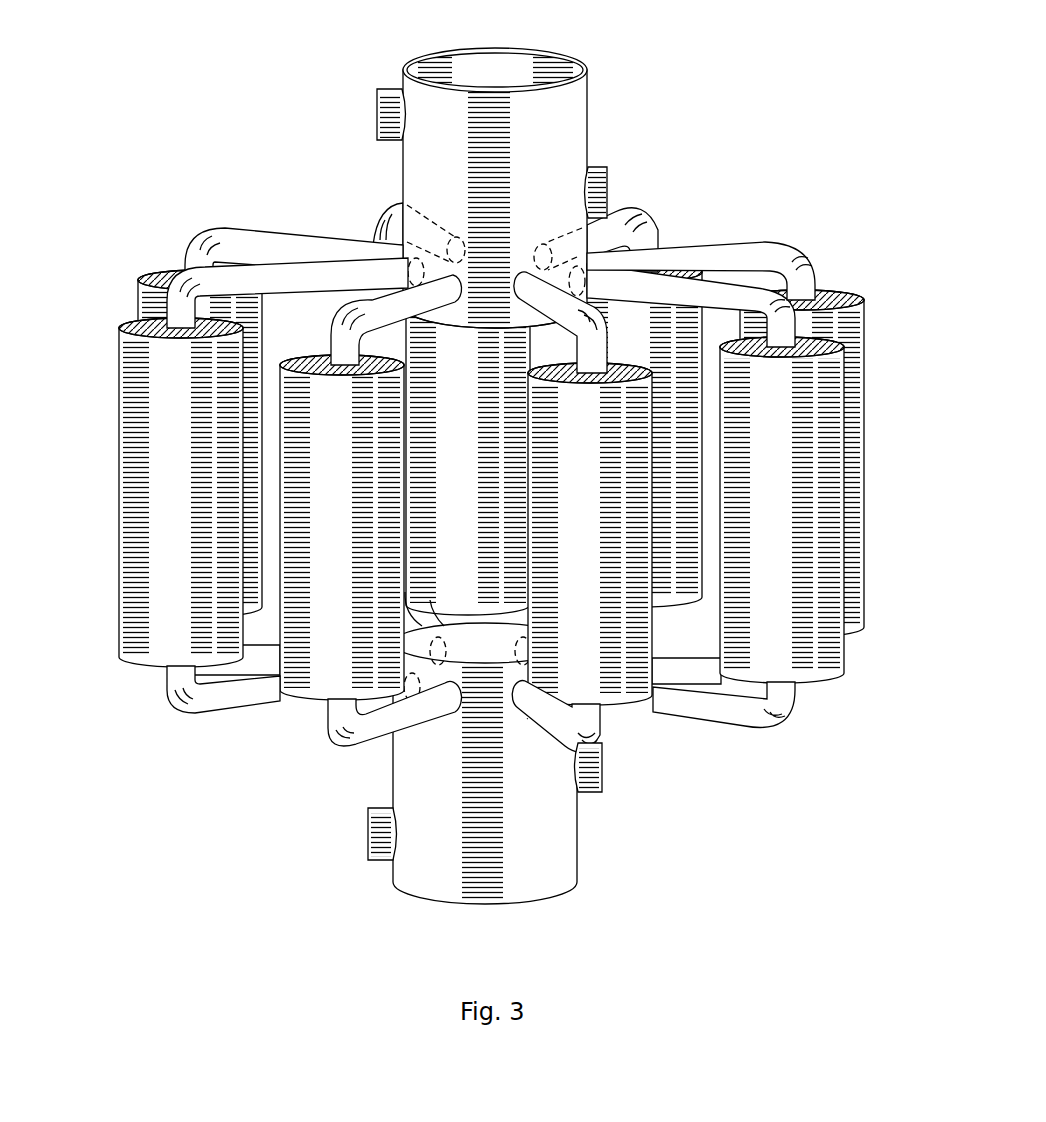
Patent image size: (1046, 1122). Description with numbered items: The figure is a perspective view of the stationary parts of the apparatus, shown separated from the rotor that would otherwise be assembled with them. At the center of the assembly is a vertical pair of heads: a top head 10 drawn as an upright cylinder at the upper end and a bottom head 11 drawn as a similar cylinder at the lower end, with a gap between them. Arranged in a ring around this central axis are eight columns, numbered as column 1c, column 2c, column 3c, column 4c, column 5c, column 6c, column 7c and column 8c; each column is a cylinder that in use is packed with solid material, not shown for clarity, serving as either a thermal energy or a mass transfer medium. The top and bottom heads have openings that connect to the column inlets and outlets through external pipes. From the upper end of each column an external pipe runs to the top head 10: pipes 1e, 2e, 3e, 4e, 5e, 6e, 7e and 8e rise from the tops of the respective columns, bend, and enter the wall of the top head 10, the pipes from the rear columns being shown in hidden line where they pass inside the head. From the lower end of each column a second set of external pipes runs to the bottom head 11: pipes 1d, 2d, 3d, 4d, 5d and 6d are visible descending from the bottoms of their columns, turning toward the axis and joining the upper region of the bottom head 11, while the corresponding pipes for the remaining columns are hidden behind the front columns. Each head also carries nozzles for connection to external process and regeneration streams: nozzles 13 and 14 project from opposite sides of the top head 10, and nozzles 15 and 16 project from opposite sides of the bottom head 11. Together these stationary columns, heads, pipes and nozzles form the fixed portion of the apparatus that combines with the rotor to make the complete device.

The top head 10 is at (578, 115).
The bottom head 11 is at (578, 830).
The nozzle 13 is at (378, 97).
The nozzle 14 is at (600, 186).
The nozzle 15 is at (373, 845).
The nozzle 16 is at (602, 780).
The column 1c is at (145, 300).
The column 2c is at (160, 483).
The column 3c is at (317, 658).
The column 4c is at (647, 700).
The column 5c is at (800, 667).
The column 6c is at (860, 400).
The column 7c is at (673, 567).
The column 8c is at (440, 447).
The external pipe 1d is at (243, 668).
The external pipe 2d is at (260, 703).
The external pipe 3d is at (372, 745).
The external pipe 4d is at (603, 727).
The external pipe 5d is at (793, 697).
The external pipe 6d is at (698, 664).
The external pipe 1e is at (290, 240).
The external pipe 2e is at (215, 283).
The external pipe 3e is at (340, 335).
The external pipe 4e is at (575, 345).
The external pipe 5e is at (835, 333).
The external pipe 6e is at (820, 288).
The external pipe 7e is at (652, 228).
The external pipe 8e is at (385, 225).